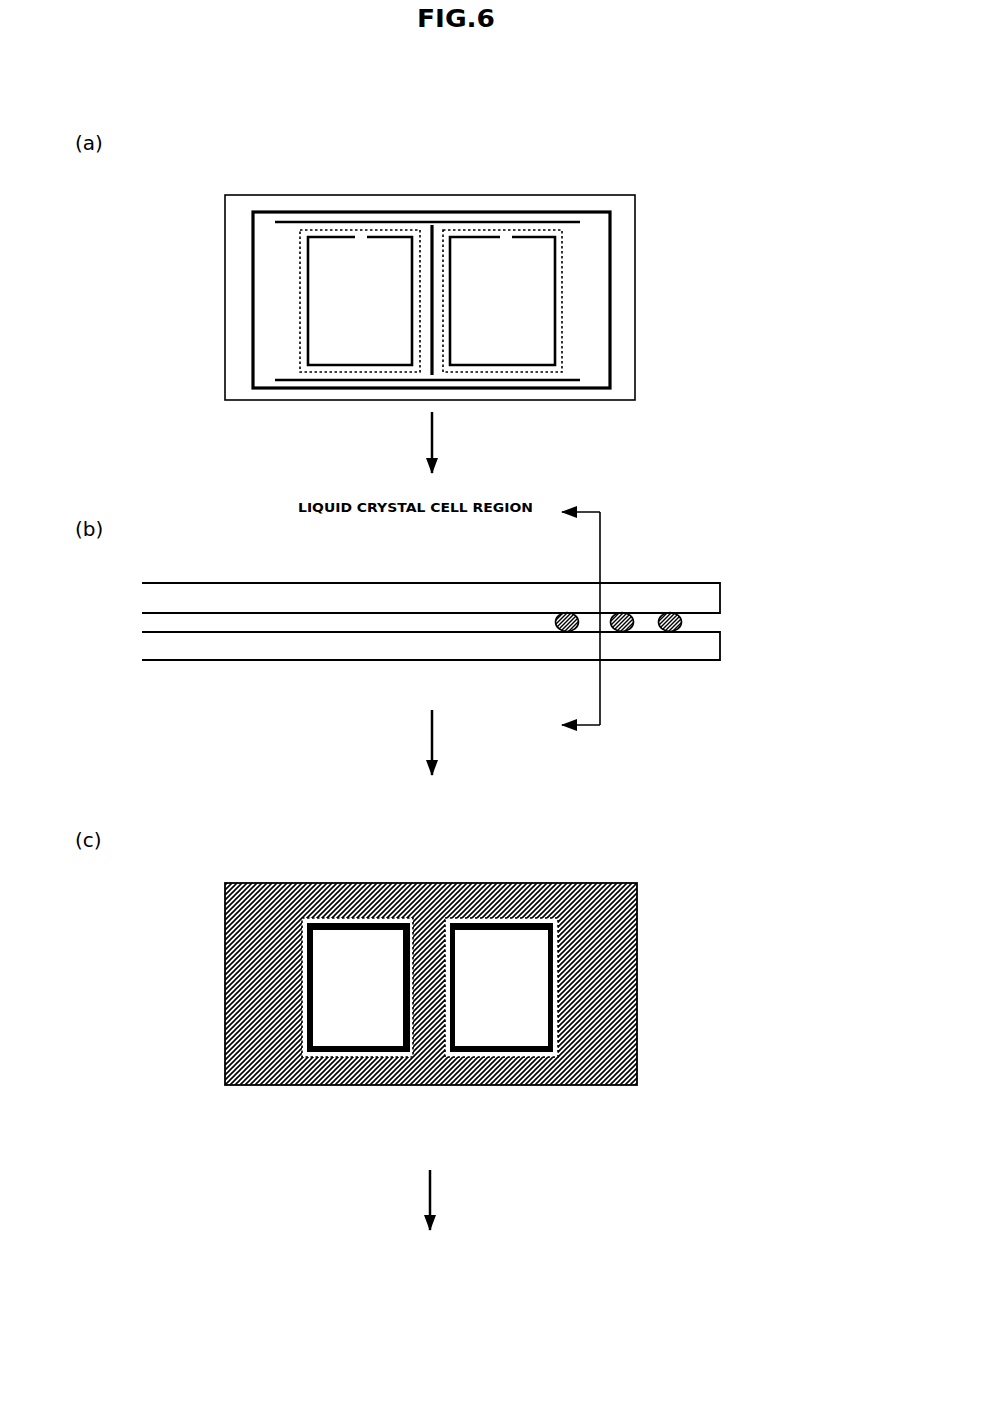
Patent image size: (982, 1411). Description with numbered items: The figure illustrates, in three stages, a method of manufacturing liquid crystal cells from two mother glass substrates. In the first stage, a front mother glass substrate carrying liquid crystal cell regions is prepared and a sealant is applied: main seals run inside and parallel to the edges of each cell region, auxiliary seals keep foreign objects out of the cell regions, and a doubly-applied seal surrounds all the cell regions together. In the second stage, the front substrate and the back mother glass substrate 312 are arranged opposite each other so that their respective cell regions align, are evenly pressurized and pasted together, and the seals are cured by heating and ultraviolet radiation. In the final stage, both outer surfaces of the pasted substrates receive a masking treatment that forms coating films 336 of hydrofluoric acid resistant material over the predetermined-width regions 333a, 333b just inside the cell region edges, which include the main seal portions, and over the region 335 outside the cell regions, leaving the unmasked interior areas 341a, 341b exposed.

The mother glass substrate 312 is at (707, 643).
The predetermined-width region 333a is at (537, 1050).
The predetermined-width region 333b is at (375, 1047).
The region other than the liquid crystal cell regions 335 is at (610, 952).
The coating film 336 is at (608, 910).
The first display opening 341a is at (508, 1033).
The second display opening 341b is at (333, 1030).